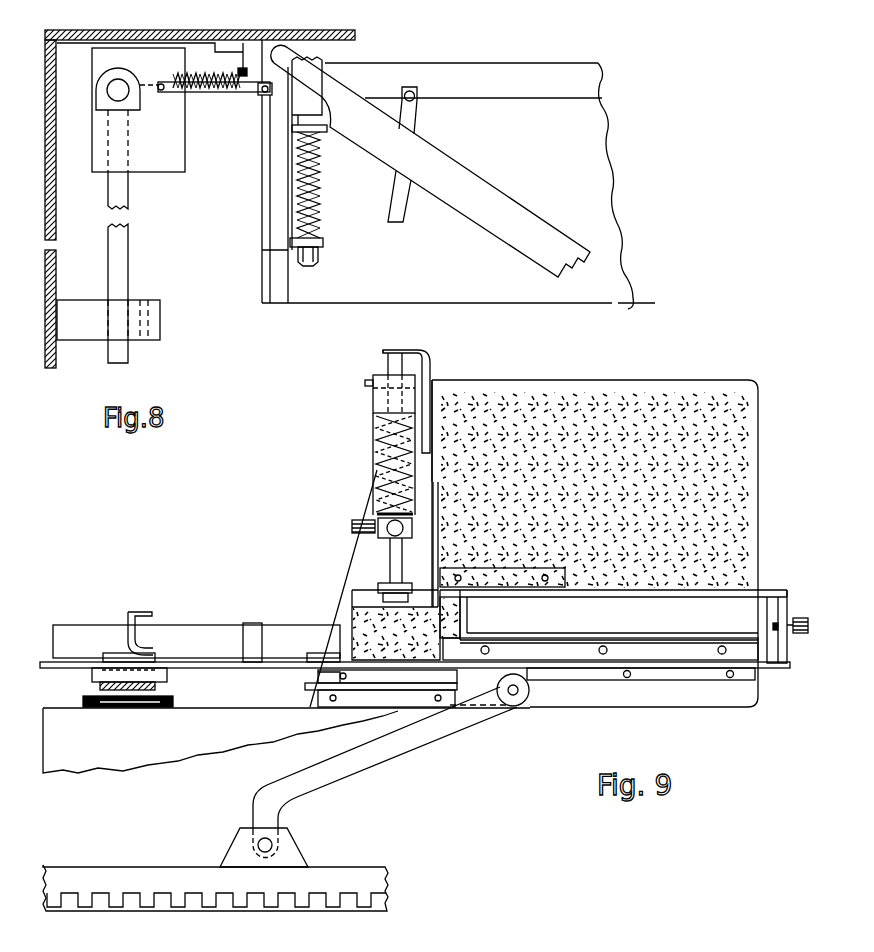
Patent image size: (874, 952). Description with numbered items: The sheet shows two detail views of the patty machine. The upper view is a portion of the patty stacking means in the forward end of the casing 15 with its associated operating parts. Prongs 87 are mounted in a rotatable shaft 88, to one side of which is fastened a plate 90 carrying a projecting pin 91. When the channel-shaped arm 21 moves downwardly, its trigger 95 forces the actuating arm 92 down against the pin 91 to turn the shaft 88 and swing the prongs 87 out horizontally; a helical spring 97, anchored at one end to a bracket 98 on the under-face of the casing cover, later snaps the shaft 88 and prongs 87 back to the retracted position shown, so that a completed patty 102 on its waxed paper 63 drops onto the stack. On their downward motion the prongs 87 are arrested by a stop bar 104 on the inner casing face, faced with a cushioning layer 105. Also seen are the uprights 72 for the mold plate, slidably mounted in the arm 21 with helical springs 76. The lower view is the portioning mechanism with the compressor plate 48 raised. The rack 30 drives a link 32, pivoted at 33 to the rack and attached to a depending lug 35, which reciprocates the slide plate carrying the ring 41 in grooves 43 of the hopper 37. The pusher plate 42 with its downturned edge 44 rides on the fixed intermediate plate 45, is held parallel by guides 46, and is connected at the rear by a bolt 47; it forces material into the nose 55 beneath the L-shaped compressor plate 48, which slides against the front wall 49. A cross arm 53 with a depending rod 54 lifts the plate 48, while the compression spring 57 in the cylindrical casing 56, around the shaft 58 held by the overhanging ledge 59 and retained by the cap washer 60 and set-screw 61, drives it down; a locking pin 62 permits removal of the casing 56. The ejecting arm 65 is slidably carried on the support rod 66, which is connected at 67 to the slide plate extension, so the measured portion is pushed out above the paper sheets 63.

In FIG. 8, the casing 15 is at (355, 37).
In FIG. 9, the casing 15 is at (250, 710).
In FIG. 8, the channel-shaped arm 21 is at (590, 152).
In FIG. 9, the slidable rack 30 is at (145, 877).
In FIG. 9, the link 32 is at (440, 720).
In FIG. 9, the pivot of link to rack 33 is at (270, 842).
In FIG. 9, the depending lug 35 is at (518, 700).
In FIG. 9, the hopper 37 is at (728, 425).
In FIG. 9, the ring 41 is at (93, 673).
In FIG. 9, the feed or pusher plate 42 is at (768, 590).
In FIG. 9, the grooves 43 is at (663, 670).
In FIG. 9, the downturned forward edge 44 is at (460, 623).
In FIG. 9, the intermediate plate 45 is at (545, 638).
In FIG. 9, the guides 46 is at (545, 582).
In FIG. 9, the screw-threaded bolt 47 is at (800, 633).
In FIG. 9, the L-shaped compressor plate 48 is at (437, 540).
In FIG. 9, the front wall 49 is at (430, 415).
In FIG. 9, the cross arm 53 is at (387, 536).
In FIG. 9, the rod 54 is at (397, 558).
In FIG. 9, the nose walls 55 is at (350, 617).
In FIG. 9, the cylindrical casing 56 is at (373, 400).
In FIG. 9, the compression spring 57 is at (373, 455).
In FIG. 9, the shaft 58 is at (395, 365).
In FIG. 9, the overhanging ledge 59 is at (423, 353).
In FIG. 9, the cap washer 60 is at (417, 383).
In FIG. 9, the set-screw 61 is at (367, 383).
In FIG. 9, the locking pin 62 is at (352, 528).
In FIG. 9, the wax paper sheets 63 is at (130, 707).
In FIG. 9, the arm 65 is at (140, 647).
In FIG. 9, the support rod 66 is at (213, 635).
In FIG. 9, the connection of rod to slide plate extension 67 is at (117, 658).
In FIG. 8, the uprights 72 is at (300, 100).
In FIG. 8, the helical springs 76 is at (320, 188).
In FIG. 8, the prongs 87 is at (123, 257).
In FIG. 8, the shaft 88 is at (117, 87).
In FIG. 8, the plate 90 is at (227, 91).
In FIG. 8, the projecting pin 91 is at (260, 93).
In FIG. 8, the actuating arm 92 is at (443, 172).
In FIG. 8, the trigger 95 is at (408, 112).
In FIG. 8, the helical spring 97 is at (203, 78).
In FIG. 8, the bracket 98 is at (243, 70).
In FIG. 9, the molded patty 102 is at (157, 683).
In FIG. 8, the stop bar 104 is at (155, 323).
In FIG. 8, the cushioning layer 105 is at (142, 330).